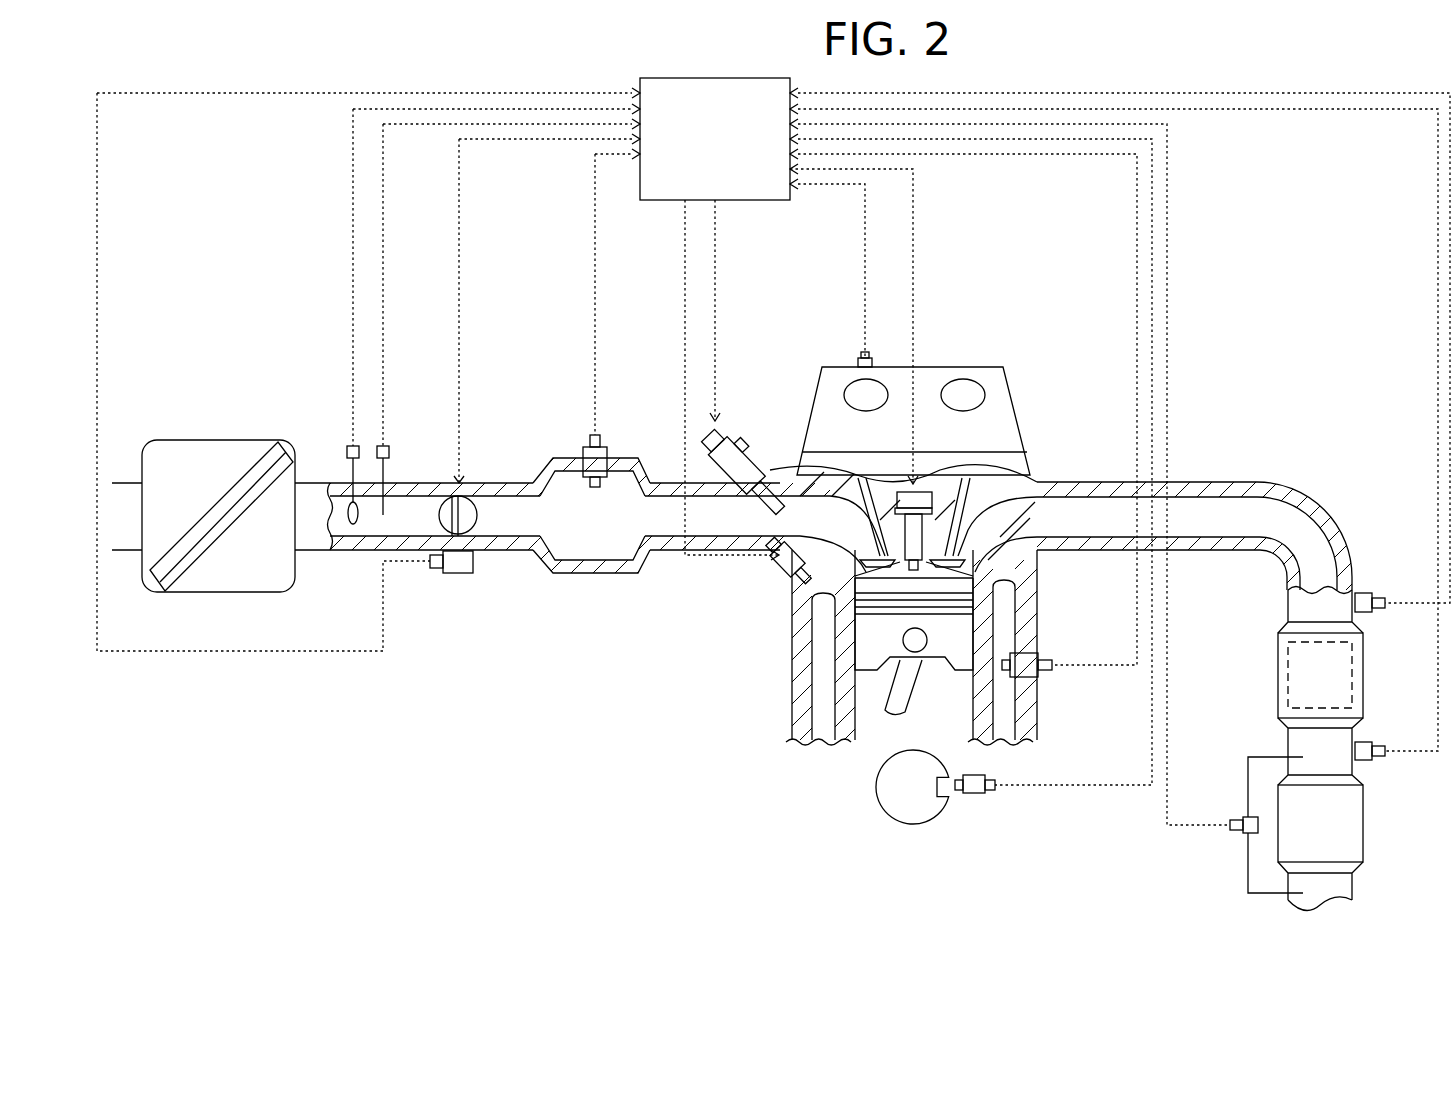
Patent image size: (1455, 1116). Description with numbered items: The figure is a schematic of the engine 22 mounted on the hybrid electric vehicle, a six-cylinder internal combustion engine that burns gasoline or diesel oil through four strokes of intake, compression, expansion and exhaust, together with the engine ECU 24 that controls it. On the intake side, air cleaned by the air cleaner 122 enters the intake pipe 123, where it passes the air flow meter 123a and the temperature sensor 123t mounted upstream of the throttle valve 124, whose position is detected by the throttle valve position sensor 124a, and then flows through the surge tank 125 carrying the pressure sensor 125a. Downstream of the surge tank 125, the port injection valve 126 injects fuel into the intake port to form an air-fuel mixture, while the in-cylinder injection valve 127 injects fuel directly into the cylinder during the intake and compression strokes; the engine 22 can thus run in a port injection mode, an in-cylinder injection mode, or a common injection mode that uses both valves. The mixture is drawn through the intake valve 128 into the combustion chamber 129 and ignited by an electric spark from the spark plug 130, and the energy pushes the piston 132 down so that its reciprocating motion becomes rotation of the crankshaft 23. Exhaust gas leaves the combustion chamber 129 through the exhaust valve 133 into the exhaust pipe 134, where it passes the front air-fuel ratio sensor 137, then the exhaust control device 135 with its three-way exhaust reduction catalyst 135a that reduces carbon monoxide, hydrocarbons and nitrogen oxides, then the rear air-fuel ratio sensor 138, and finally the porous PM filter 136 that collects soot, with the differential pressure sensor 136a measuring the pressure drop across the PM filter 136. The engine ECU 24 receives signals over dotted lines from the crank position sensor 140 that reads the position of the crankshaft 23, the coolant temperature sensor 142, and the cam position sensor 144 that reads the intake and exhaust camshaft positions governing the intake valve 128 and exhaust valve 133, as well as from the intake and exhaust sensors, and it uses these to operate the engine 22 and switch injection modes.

The engine 22 is at (1014, 332).
The crankshaft 23 is at (915, 825).
The engine electronic control unit (ECU) 24 is at (715, 76).
The air cleaner 122 is at (215, 440).
The intake pipe 123 is at (352, 551).
The air flow meter 123a is at (347, 450).
The temperature sensor 123t is at (389, 450).
The throttle valve 124 is at (470, 483).
The throttle valve position sensor 124a is at (462, 575).
The surge tank 125 is at (620, 456).
The pressure sensor 125a is at (583, 447).
The port injection valve 126 is at (757, 462).
The in-cylinder injection valve 127 is at (818, 566).
The intake valve 128 is at (860, 550).
The combustion chamber 129 is at (985, 568).
The spark plug 130 is at (922, 532).
The piston 132 is at (872, 655).
The exhaust valve 133 is at (958, 578).
The exhaust pipe 134 is at (1083, 482).
The exhaust control device 135 is at (1278, 688).
The exhaust reduction catalyst (three-way catalyst) 135a is at (1278, 660).
The particulate matter (PM) filter 136 is at (1363, 828).
The differential pressure sensor 136a is at (1243, 817).
The front air-fuel ratio sensor 137 is at (1378, 594).
The rear air-fuel ratio sensor 138 is at (1378, 742).
The crank position sensor 140 is at (975, 795).
The coolant temperature sensor 142 is at (1045, 680).
The cam position sensor 144 is at (860, 360).